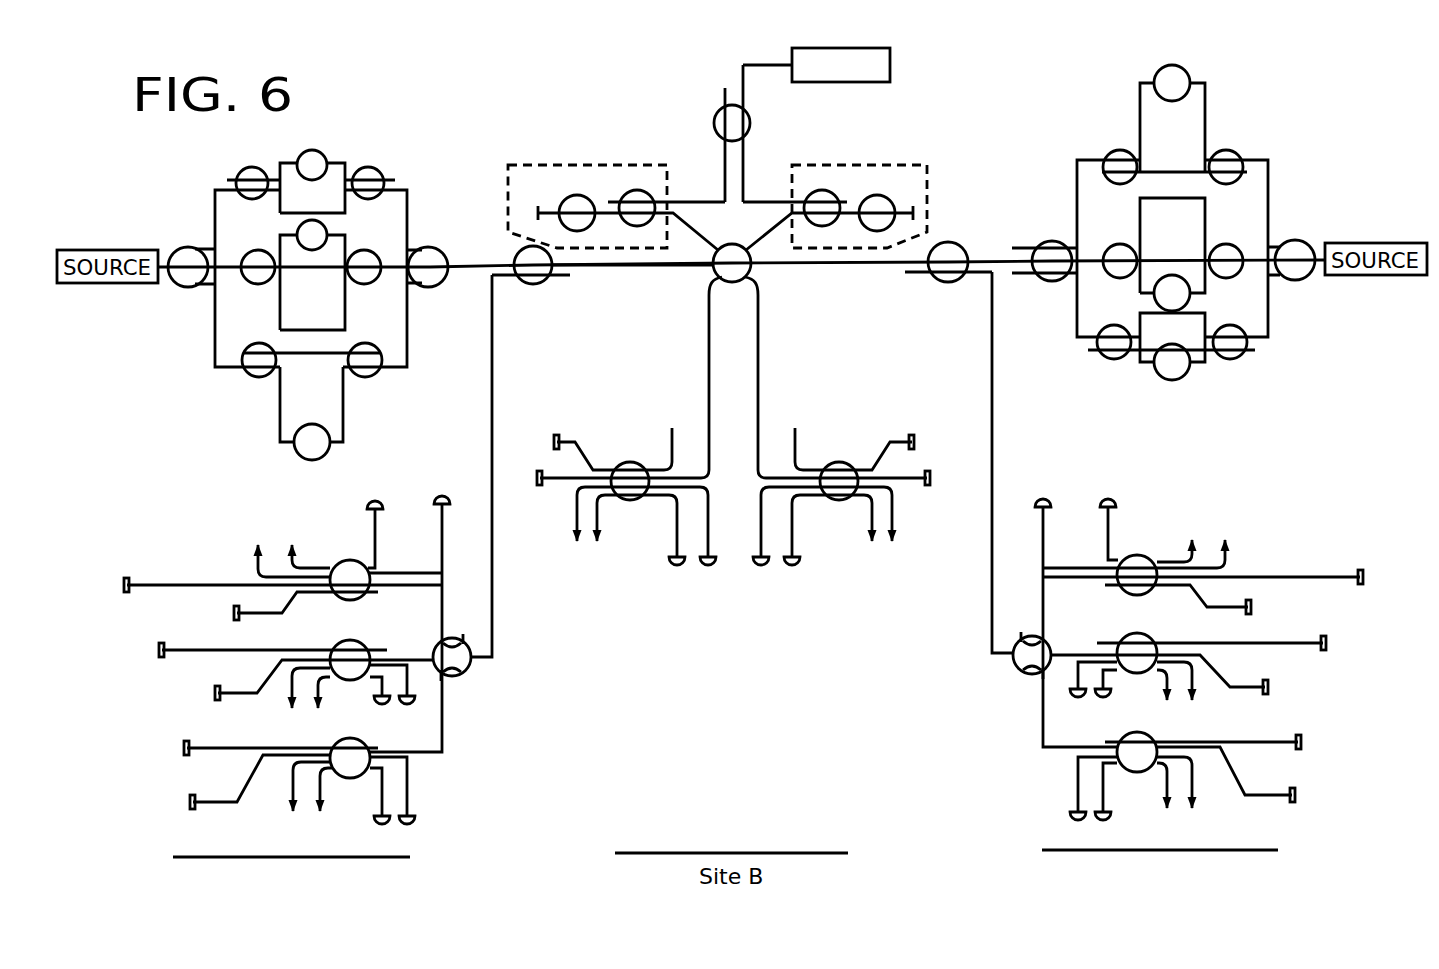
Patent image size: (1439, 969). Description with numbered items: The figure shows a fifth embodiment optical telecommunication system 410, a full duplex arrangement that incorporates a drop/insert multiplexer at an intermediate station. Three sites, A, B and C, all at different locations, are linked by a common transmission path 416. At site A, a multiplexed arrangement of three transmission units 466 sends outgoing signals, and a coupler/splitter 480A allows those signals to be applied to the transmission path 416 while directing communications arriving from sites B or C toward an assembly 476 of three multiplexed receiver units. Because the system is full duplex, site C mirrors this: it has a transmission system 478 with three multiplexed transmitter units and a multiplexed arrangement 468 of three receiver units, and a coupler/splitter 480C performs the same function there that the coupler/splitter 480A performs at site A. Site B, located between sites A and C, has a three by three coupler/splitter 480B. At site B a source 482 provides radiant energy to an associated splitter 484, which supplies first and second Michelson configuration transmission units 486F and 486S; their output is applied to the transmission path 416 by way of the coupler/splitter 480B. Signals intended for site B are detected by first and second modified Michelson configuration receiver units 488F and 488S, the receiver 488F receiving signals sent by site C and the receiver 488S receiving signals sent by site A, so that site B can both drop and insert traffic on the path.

The optical telecommunication system 410 is at (595, 88).
The transmission path 416 is at (628, 268).
The multiplexed arrangement of three transmission units 466 is at (356, 144).
The transmission system 478 is at (1252, 138).
The source 482 is at (818, 48).
The splitter 484 is at (713, 121).
The first Michelson configuration transmission unit 486F is at (587, 163).
The second Michelson configuration transmission unit 486S is at (842, 163).
The coupler/splitter 480A is at (524, 286).
The 3 by 3 coupler/splitter 480B is at (714, 272).
The coupler/splitter 480C is at (958, 245).
The assembly of three multiplexed receiver units 476 is at (466, 743).
The multiplexed arrangement of three receiver units 468 is at (1270, 524).
The first modified Michelson configuration receiver unit 488F is at (640, 566).
The second modified Michelson configuration receiver unit 488S is at (830, 572).